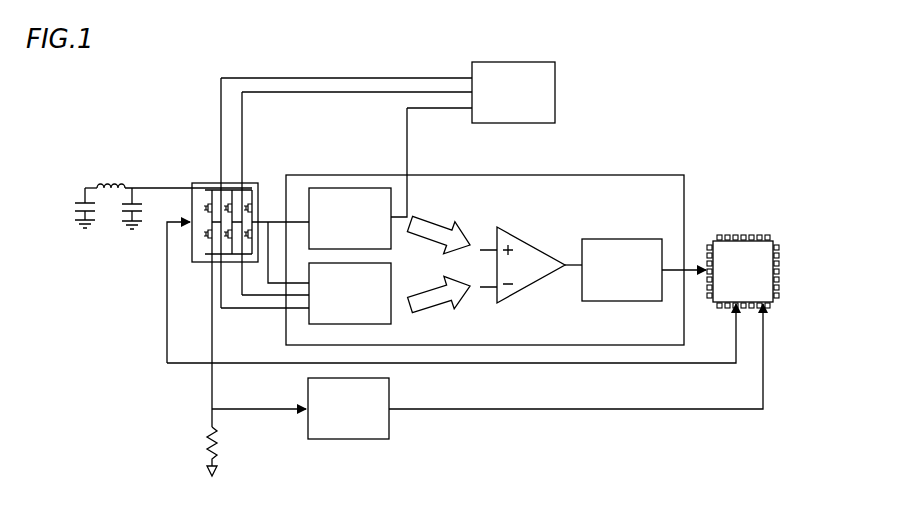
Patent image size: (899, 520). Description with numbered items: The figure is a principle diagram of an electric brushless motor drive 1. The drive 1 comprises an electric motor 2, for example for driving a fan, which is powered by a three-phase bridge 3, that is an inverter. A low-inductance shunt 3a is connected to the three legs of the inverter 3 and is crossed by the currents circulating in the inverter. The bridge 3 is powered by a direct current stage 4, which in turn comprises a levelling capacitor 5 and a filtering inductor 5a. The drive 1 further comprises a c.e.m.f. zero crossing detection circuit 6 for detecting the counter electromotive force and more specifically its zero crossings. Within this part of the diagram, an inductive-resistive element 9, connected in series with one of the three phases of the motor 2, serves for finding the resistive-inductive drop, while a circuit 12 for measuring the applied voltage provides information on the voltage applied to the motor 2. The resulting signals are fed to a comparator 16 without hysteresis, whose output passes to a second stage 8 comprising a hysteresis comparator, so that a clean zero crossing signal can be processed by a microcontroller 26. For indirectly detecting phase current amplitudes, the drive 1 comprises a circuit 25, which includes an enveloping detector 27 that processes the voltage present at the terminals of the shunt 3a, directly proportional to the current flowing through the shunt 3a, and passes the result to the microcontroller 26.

The electric drive 1 is at (642, 115).
The electric motor 2 is at (513, 92).
The three-phase bridge 3 is at (197, 180).
The low-inductance shunt 3a is at (198, 441).
The direct current stage 4 is at (100, 173).
The levelling capacitor 5 is at (128, 210).
The filtering inductor 5a is at (113, 170).
The c.e.m.f. zero crossing detection circuit 6 is at (679, 173).
The second stage 8 is at (622, 270).
The inductive-resistive element 9 is at (350, 218).
The circuit for measuring the applied voltage 12 is at (350, 293).
The comparator 16 is at (530, 300).
The circuit for indirectly detecting phase current amplitudes 25 is at (474, 416).
The microcontroller 26 is at (743, 271).
The enveloping detector 27 is at (348, 408).